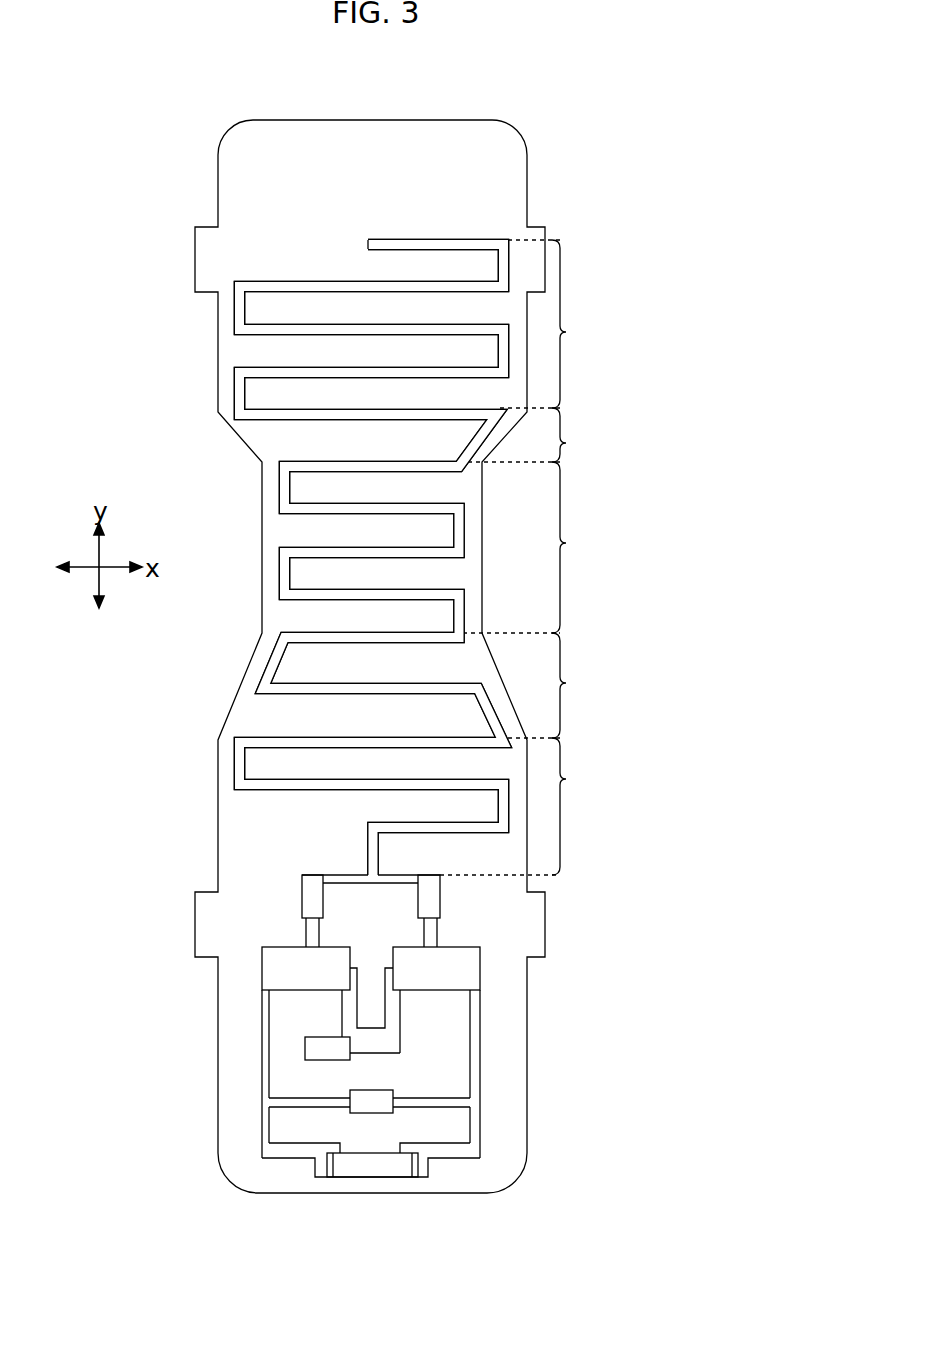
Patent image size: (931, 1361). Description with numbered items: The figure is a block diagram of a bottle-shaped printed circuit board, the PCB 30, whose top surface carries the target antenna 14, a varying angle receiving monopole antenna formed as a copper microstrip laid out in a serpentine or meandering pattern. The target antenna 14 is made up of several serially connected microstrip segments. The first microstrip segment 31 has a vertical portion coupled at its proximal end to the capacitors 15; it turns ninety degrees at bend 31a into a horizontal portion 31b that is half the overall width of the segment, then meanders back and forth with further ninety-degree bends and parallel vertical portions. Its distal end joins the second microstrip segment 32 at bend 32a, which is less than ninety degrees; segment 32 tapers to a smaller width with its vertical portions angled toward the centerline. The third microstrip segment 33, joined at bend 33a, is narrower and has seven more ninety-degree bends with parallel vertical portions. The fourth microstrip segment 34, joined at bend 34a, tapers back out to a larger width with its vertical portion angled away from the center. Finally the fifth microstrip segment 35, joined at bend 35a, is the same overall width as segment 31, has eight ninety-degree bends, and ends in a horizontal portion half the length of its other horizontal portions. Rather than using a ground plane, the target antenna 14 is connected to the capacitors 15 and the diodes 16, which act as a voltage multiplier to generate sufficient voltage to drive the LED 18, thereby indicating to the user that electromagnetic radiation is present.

The target antenna 14 is at (463, 243).
The capacitors 15 is at (312, 900).
The diodes 16 is at (277, 977).
The LED 18 is at (372, 1170).
The PCB 30 is at (217, 188).
The first microstrip segment 31 is at (422, 796).
The bend 31a is at (380, 834).
The horizontal portion 31b is at (420, 822).
The second microstrip segment 32 is at (432, 685).
The bend 32a is at (478, 737).
The third microstrip segment 33 is at (438, 552).
The bend 33a is at (453, 625).
The fourth microstrip segment 34 is at (421, 428).
The bend 34a is at (450, 453).
The fifth microstrip segment 35 is at (422, 324).
The bend 35a is at (473, 433).